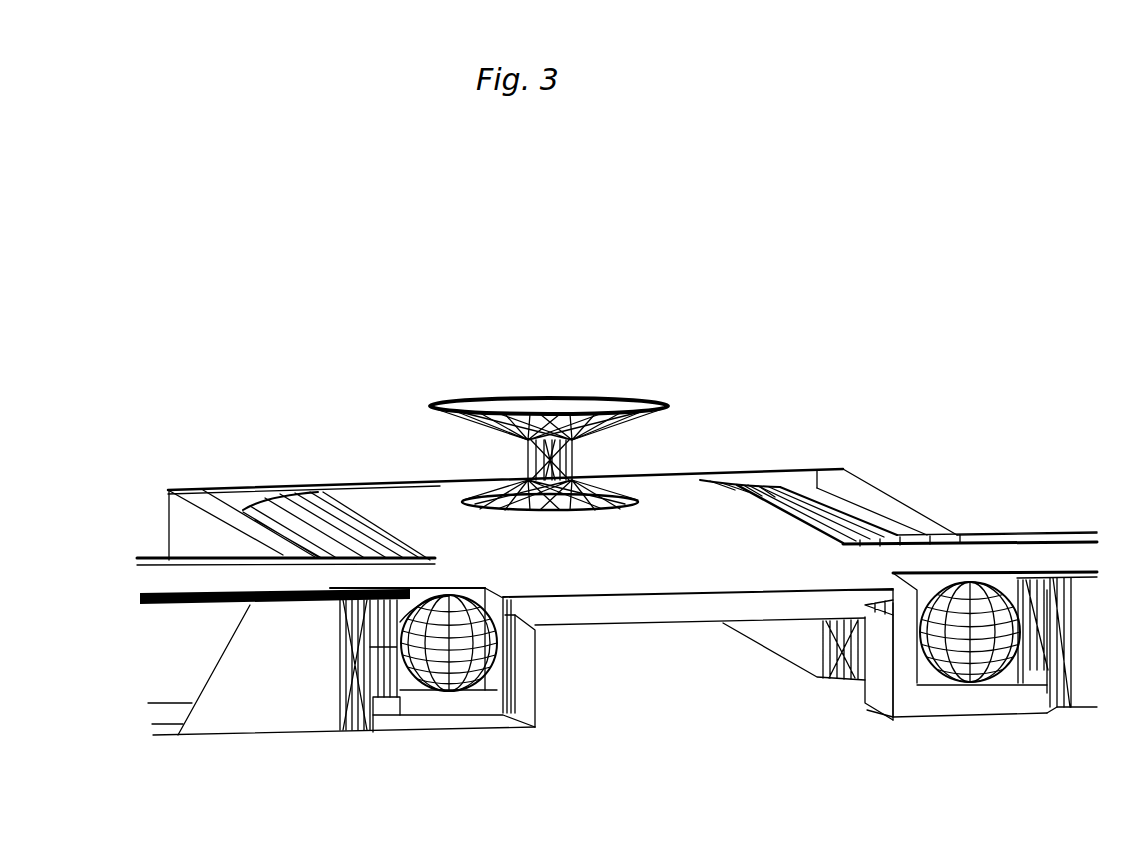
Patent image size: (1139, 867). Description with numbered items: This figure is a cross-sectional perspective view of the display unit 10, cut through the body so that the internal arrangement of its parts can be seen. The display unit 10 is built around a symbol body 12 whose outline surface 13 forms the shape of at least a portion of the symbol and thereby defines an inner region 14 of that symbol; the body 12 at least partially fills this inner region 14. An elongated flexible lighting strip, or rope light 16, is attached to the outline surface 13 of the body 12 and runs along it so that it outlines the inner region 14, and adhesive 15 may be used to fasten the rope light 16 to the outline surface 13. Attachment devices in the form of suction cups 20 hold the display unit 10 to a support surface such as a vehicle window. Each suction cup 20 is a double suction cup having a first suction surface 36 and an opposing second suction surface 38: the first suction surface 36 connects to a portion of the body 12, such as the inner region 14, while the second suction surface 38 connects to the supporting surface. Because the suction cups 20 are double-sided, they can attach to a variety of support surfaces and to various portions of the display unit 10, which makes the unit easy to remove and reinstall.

The display unit 10 is at (636, 296).
The symbol body 12 is at (740, 528).
The outline surface 13 is at (497, 697).
The inner region 14 is at (463, 543).
The adhesive 15 is at (427, 692).
The elongated flexible lighting strip (rope light) 16 is at (853, 522).
The suction cup 20 is at (528, 400).
The first suction surface 36 is at (640, 512).
The second suction surface 38 is at (600, 400).